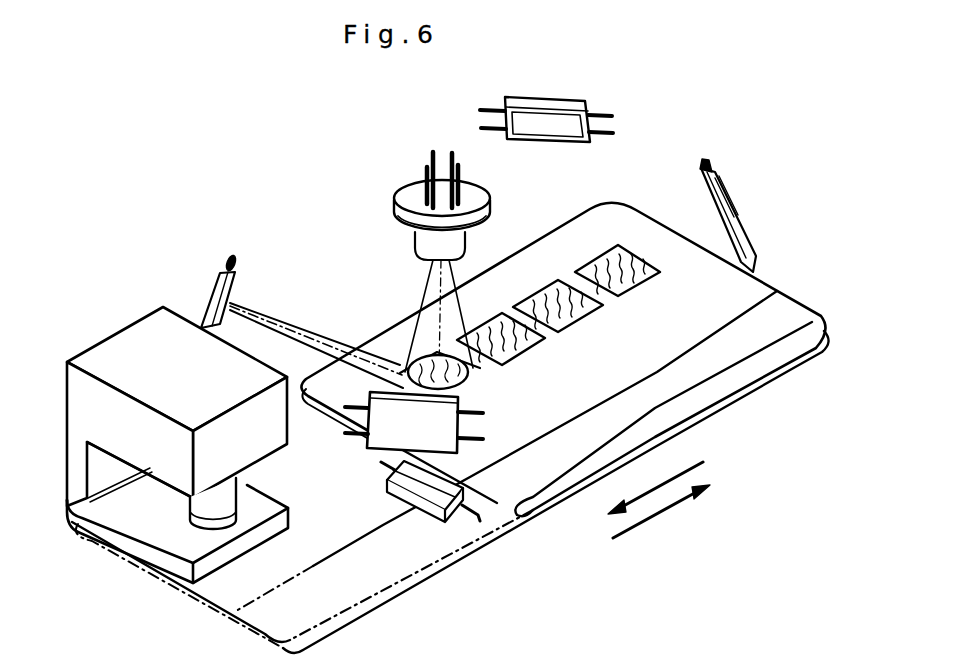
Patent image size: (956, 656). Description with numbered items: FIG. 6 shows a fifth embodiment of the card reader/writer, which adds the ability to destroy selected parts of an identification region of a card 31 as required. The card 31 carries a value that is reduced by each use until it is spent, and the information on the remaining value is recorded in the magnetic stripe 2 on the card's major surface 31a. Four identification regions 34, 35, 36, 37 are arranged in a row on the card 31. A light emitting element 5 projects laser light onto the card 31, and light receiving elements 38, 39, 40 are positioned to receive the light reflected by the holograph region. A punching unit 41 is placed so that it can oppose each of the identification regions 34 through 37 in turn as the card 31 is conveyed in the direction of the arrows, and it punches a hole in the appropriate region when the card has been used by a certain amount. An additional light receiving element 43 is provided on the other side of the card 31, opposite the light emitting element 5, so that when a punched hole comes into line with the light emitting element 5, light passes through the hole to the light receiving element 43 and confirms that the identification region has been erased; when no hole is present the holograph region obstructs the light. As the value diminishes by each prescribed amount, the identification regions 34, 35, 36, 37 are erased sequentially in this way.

The magnetic stripe 2 is at (753, 342).
The light emitting element 5 is at (408, 195).
The card 31 is at (392, 320).
The tray rim 31a is at (763, 298).
The identification region 34 is at (483, 372).
The identification region 35 is at (537, 343).
The identification region 36 is at (555, 282).
The identification region 37 is at (610, 253).
The light receiving element 38 is at (213, 290).
The light receiving element 39 is at (380, 442).
The light receiving element 40 is at (733, 203).
The punching unit 41 is at (134, 335).
The additional light receiving element 43 is at (400, 497).